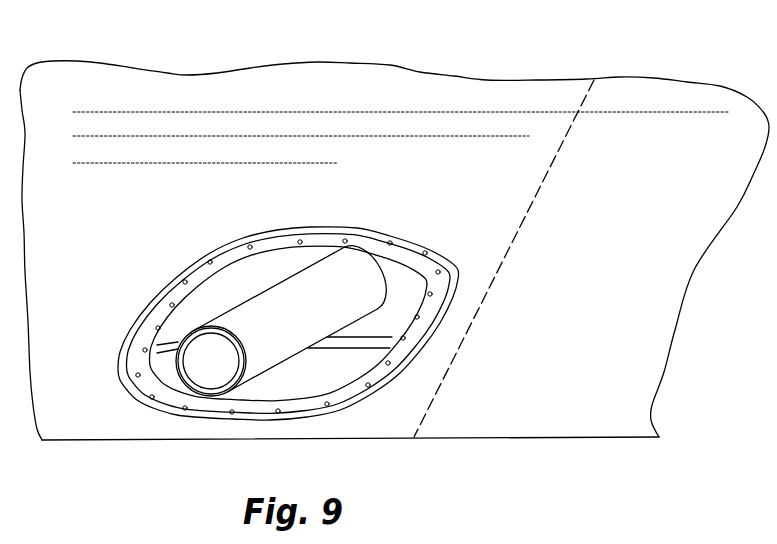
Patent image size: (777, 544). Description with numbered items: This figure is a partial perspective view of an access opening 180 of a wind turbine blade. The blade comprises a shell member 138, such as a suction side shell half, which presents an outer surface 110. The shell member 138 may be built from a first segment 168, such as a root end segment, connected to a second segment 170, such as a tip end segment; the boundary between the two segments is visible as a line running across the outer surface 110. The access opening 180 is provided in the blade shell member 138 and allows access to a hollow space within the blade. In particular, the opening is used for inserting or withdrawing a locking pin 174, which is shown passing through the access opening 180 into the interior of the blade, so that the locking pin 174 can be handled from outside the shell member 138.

The first segment 168 is at (356, 78).
The second segment 170 is at (660, 90).
The outer surface 110 is at (432, 197).
The access opening 180 is at (143, 263).
The locking pin 174 is at (200, 377).
The shell member 138 is at (80, 428).